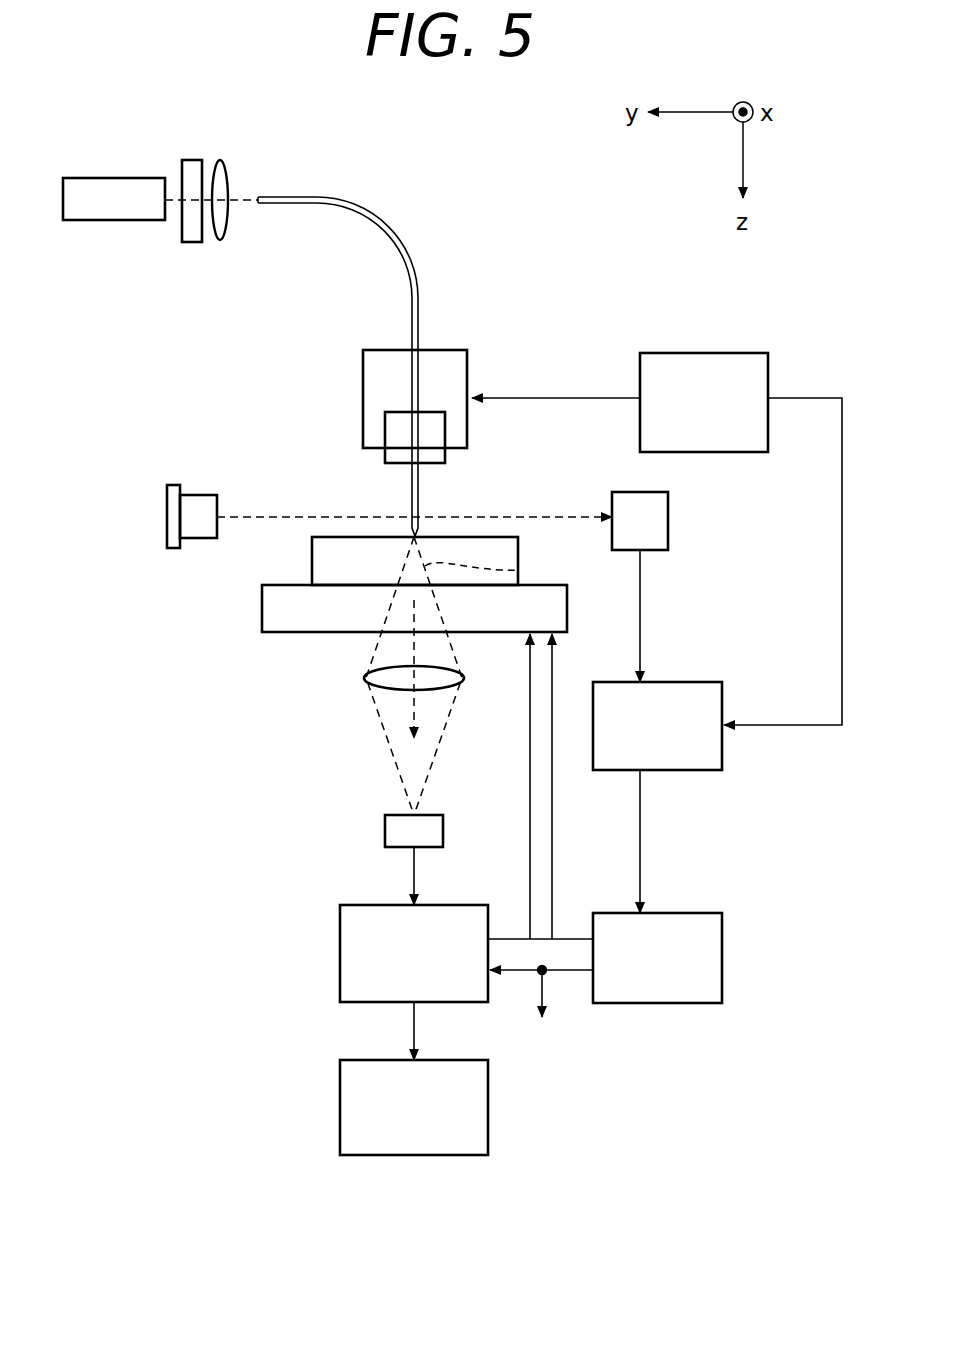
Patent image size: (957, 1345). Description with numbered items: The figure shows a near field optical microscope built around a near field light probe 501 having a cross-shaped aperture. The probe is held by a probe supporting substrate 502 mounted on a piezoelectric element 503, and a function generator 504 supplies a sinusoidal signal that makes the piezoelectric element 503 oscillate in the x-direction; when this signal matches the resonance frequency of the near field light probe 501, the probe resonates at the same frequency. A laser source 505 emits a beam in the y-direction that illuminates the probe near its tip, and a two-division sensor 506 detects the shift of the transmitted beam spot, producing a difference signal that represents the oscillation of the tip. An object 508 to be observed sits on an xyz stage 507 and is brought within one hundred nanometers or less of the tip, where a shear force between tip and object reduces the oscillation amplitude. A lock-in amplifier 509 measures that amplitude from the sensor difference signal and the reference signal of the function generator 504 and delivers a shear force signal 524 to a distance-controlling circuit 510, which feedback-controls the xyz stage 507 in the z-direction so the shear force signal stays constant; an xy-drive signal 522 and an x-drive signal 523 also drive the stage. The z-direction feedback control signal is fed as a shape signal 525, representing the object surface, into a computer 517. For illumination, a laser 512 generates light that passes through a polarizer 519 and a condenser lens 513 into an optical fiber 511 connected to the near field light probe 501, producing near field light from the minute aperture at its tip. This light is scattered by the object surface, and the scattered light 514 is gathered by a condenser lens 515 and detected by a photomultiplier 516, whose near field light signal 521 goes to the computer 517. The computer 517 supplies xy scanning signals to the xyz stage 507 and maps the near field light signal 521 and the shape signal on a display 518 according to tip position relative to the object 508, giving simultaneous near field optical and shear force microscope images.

The near field light probe 501 is at (411, 498).
The probe supporting substrate 502 is at (448, 456).
The piezoelectric element 503 is at (440, 350).
The function generator 504 is at (736, 353).
The laser source 505 is at (166, 506).
The two-division sensor 506 is at (670, 521).
The xyz stage 507 is at (268, 610).
The object to be observed 508 is at (316, 560).
The lock-in amplifier 509 is at (676, 682).
The distance-controlling circuit 510 is at (724, 945).
The optical fiber 511 is at (392, 215).
The laser 512 is at (105, 178).
The condenser lens 513 is at (224, 170).
The scattered light 514 is at (520, 570).
The condenser lens 515 is at (370, 680).
The photomultiplier 516 is at (385, 832).
The computer 517 is at (340, 950).
The display 518 is at (340, 1104).
The polarizer 519 is at (182, 234).
The near field light signal 521 is at (412, 867).
The xy-drive signal 522 is at (529, 812).
The x-drive signal 523 is at (553, 812).
The shear force signal 524 is at (641, 828).
The shape signal 525 is at (520, 978).